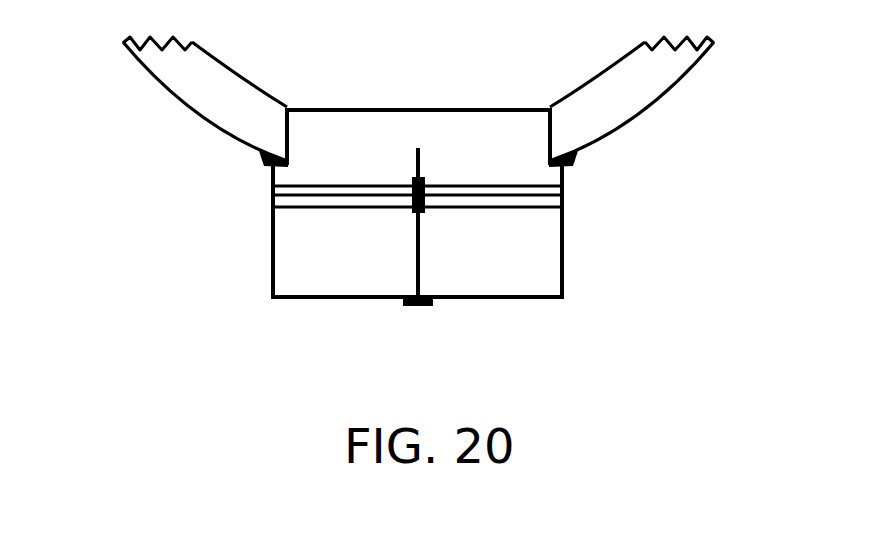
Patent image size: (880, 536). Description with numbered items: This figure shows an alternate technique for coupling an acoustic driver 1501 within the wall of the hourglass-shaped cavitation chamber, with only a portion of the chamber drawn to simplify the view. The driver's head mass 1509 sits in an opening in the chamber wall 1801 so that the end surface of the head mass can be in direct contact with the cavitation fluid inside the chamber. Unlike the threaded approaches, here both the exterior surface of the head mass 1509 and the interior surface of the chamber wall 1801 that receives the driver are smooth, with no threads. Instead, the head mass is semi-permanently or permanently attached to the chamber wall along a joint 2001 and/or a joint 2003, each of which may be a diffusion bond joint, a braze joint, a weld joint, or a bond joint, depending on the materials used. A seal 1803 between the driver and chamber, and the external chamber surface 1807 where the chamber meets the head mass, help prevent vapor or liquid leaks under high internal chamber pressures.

The acoustic driver 1501 is at (592, 280).
The head mass 1509 is at (455, 138).
The chamber wall 1801 is at (623, 103).
The external chamber surface 1807 is at (224, 142).
The seal 1803 is at (565, 118).
The joint 2001 is at (300, 124).
The joint 2003 is at (267, 165).